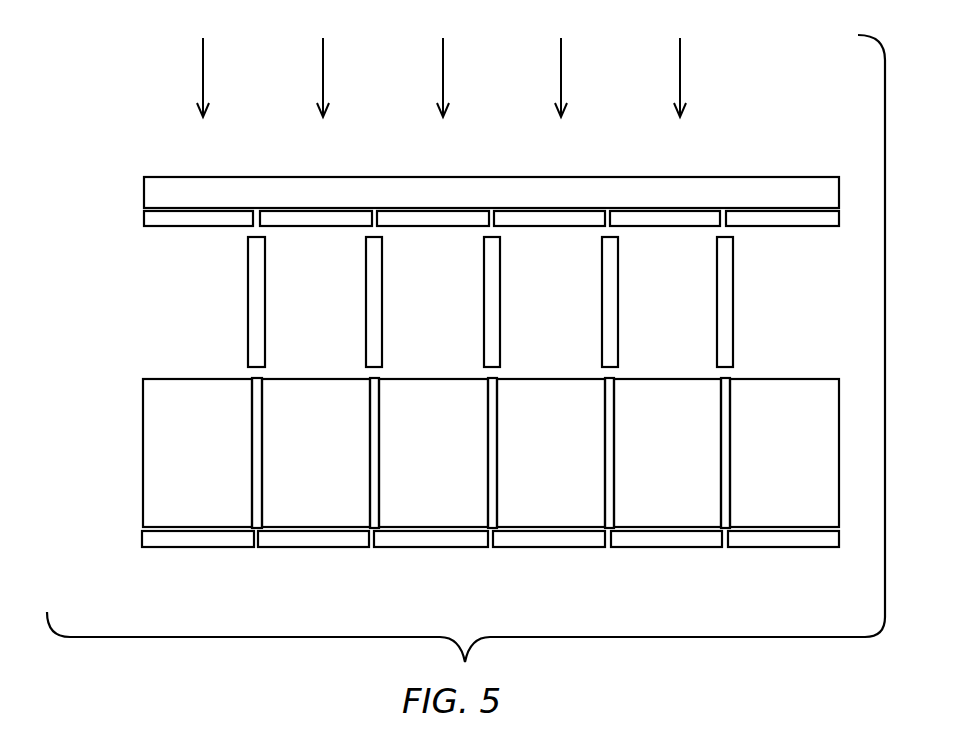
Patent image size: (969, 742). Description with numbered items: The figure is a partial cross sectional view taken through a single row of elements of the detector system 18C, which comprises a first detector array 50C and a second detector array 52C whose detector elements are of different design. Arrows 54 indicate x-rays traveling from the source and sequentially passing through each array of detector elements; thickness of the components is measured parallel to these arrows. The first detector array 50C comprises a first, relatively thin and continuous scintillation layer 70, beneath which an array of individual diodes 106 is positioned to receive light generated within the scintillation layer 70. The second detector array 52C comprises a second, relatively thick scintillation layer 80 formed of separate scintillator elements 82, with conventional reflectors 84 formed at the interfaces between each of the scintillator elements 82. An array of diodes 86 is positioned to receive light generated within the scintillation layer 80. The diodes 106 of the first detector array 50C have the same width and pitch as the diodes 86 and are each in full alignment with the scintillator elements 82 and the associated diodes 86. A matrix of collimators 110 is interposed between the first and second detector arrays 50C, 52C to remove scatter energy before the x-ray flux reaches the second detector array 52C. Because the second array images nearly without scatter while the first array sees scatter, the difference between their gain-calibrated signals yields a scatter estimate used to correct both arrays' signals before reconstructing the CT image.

The detector system 18C is at (158, 105).
The arrows 54 is at (640, 88).
The diodes 106 is at (288, 220).
The scintillation layer 70 is at (723, 177).
The first detector array 50C is at (133, 178).
The collimators 110 is at (717, 302).
The reflectors 84 is at (252, 402).
The scintillation layer 80 is at (800, 368).
The second detector array 52C is at (137, 379).
The scintillator elements 82 is at (200, 490).
The diodes 86 is at (298, 537).